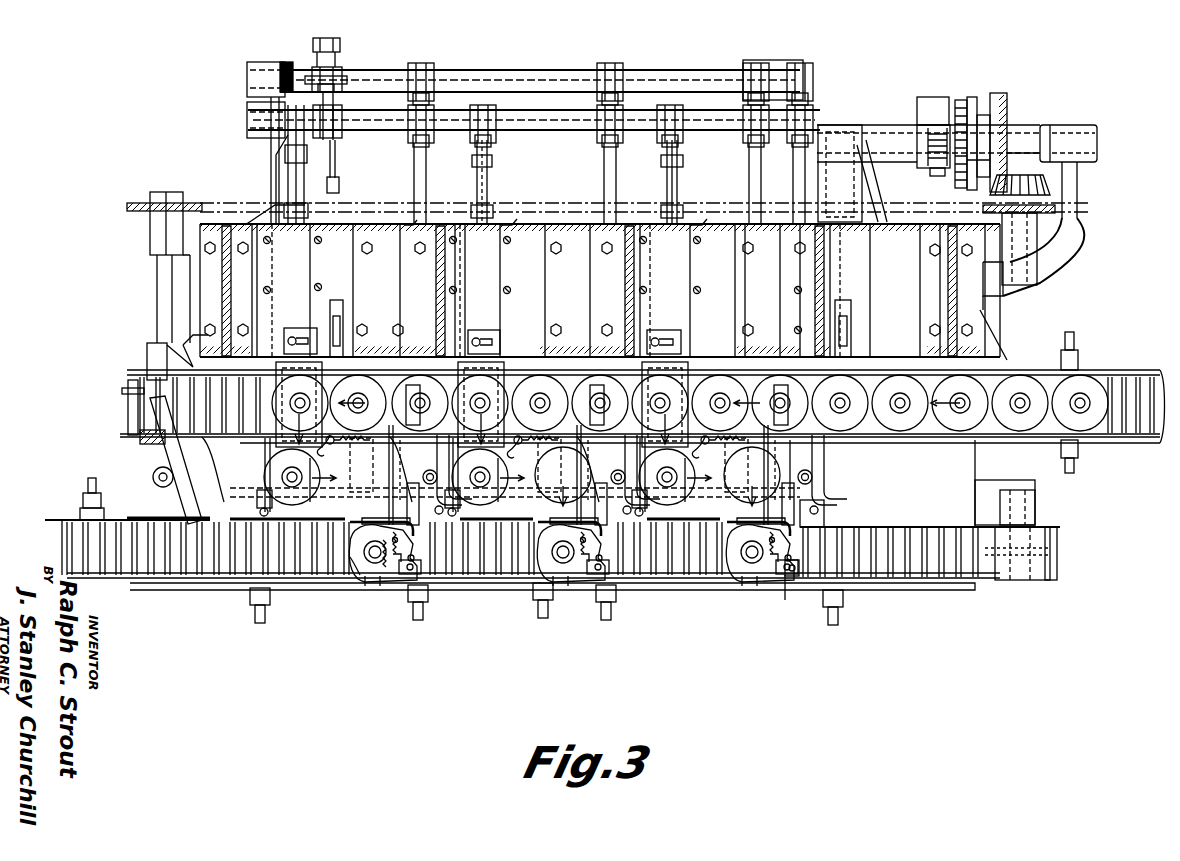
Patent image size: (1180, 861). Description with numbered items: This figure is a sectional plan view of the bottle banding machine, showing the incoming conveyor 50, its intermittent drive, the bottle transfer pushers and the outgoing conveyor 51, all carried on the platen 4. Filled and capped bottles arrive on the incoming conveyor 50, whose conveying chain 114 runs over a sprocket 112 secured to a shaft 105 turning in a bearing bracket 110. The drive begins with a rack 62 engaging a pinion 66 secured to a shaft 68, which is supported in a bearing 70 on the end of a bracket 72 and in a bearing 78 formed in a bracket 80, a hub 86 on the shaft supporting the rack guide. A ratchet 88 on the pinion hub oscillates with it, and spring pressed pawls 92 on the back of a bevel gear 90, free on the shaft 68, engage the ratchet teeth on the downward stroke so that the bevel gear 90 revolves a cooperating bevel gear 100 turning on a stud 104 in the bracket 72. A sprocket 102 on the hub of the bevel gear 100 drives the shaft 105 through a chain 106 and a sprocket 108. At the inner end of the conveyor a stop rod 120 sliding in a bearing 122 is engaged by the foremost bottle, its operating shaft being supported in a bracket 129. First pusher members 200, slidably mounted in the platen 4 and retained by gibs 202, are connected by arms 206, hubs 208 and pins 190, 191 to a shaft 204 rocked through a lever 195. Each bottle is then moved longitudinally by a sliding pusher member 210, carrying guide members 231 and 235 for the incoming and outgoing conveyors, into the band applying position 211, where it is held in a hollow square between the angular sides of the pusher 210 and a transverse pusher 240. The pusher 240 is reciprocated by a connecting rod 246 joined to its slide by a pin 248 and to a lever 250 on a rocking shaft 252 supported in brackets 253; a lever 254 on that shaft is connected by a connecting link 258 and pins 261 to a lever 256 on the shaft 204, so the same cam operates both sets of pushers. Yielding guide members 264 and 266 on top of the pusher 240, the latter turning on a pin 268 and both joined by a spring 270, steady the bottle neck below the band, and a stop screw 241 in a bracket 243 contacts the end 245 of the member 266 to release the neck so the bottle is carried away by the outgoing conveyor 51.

The platen 4 is at (963, 460).
The incoming conveyor 50 is at (1105, 442).
The outgoing conveyor 51 is at (1053, 559).
The rack 62 is at (935, 96).
The pinion 66 is at (930, 174).
The shaft 68 is at (1020, 127).
The bearing 70 is at (1066, 122).
The bracket 72 is at (1058, 220).
The bearing 78 is at (837, 125).
The bracket 80 is at (856, 170).
The hub 86 is at (890, 125).
The ratchet 88 is at (977, 100).
The bevel gear 90 is at (998, 95).
The spring pressed pawls 92 is at (958, 103).
The bevel gear 100 is at (1053, 188).
The sprocket 102 is at (1053, 209).
The stud 104 is at (1048, 170).
The shaft 105 is at (155, 302).
The chain 106 is at (394, 190).
The sprocket 108 is at (124, 202).
The bearing bracket 110 is at (178, 279).
The sprocket 112 is at (202, 372).
The conveying chain 114 is at (1160, 383).
The rod 120 is at (130, 432).
The bearing 122 is at (168, 356).
The bracket 129 is at (182, 508).
The pin 190 is at (494, 160).
The pin 191 is at (493, 196).
The lever 195 is at (272, 167).
The pusher members 200 is at (502, 222).
The gibs 202 is at (272, 212).
The shaft 204 is at (407, 64).
The arms 206 is at (470, 142).
The hubs 208 is at (475, 177).
The sliding pusher member 210 is at (266, 590).
The band applying position 211 is at (325, 474).
The guide member 231 is at (364, 392).
The guide member 235 is at (352, 568).
The pusher 240 is at (380, 508).
The stop screw 241 is at (792, 605).
The bracket 243 is at (783, 572).
The end 245 is at (798, 571).
The connecting rod 246 is at (600, 290).
The pin 248 is at (532, 404).
The lever 250 is at (426, 104).
The rocking shaft 252 is at (532, 76).
The brackets 253 is at (250, 60).
The lever 254 is at (310, 60).
The lever 256 is at (346, 120).
The connecting link 258 is at (295, 76).
The pins 261 is at (310, 50).
The guide member 264 is at (798, 503).
The guide member 266 is at (357, 580).
The pin 268 is at (413, 570).
The spring 270 is at (396, 626).